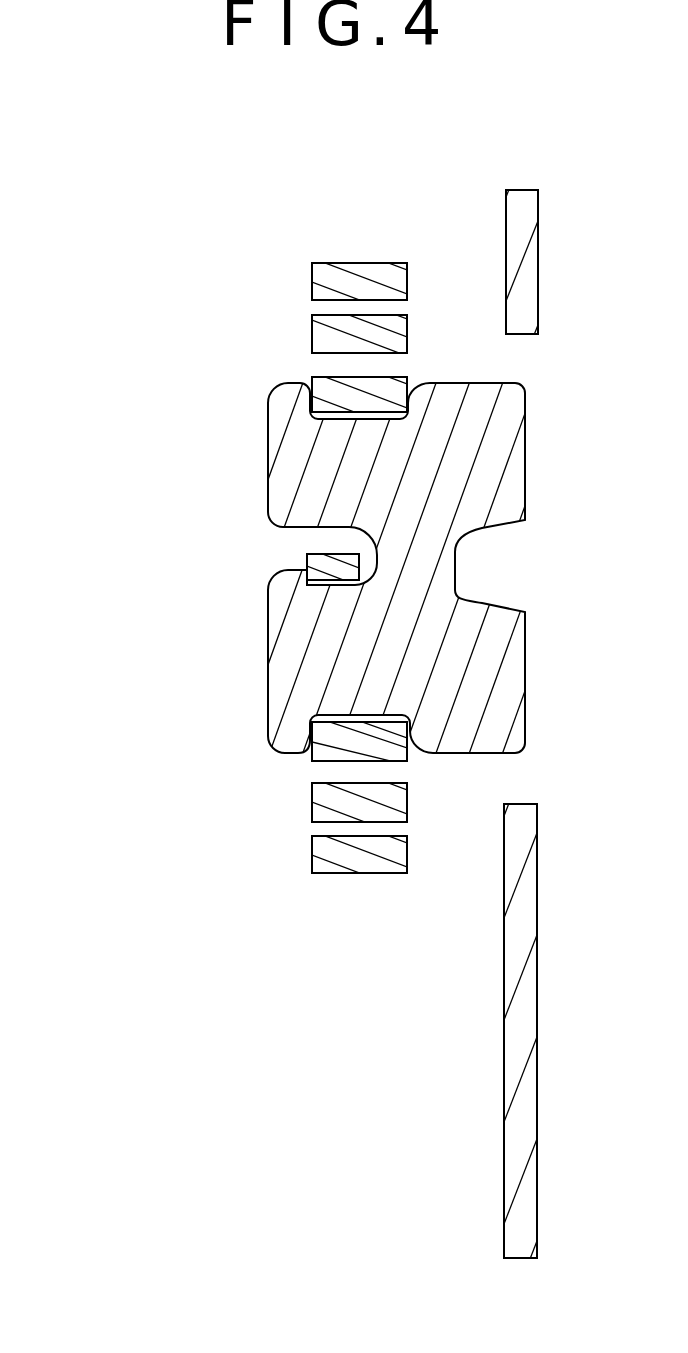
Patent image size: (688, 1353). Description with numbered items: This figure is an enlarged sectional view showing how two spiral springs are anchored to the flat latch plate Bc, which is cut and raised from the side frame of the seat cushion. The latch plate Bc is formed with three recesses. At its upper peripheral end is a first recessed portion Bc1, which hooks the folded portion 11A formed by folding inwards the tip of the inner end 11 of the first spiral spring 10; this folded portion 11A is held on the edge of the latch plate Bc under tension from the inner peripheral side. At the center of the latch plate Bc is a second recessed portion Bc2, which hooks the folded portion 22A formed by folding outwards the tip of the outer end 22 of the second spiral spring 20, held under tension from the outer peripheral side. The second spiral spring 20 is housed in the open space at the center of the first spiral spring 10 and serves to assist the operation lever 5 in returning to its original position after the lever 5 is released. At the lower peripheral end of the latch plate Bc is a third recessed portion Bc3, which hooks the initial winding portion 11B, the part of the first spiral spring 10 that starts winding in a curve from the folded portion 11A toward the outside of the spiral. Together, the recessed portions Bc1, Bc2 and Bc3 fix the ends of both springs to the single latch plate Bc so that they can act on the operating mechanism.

The first spiral spring 10 is at (289, 545).
The inner end 11 is at (289, 605).
The folded portion 11A is at (337, 392).
The initial winding portion 11B is at (362, 738).
The second spiral spring 20 is at (203, 527).
The outer end 22 is at (203, 566).
The folded portion 22A is at (330, 550).
The latch plate Bc is at (465, 440).
The first recessed portion Bc1 is at (342, 418).
The second recessed portion Bc2 is at (307, 580).
The third recessed portion Bc3 is at (332, 748).
The operation lever 5 is at (523, 1020).